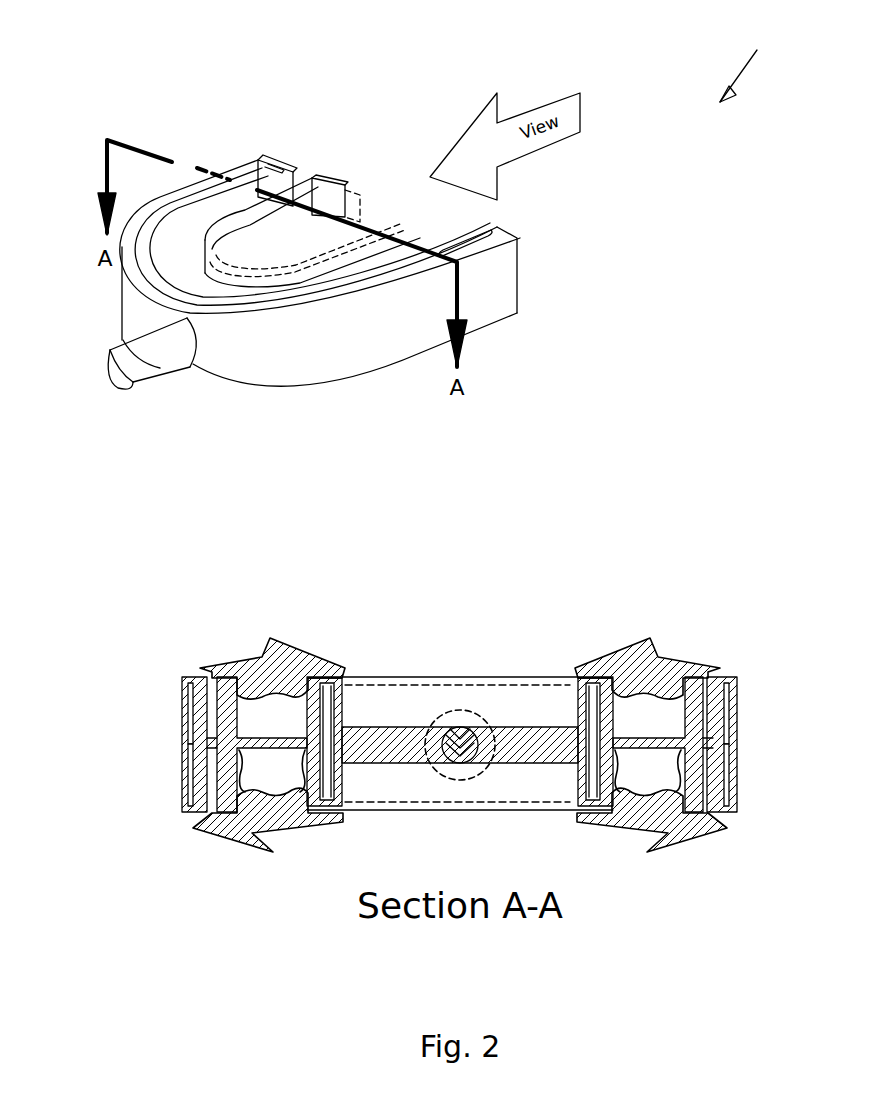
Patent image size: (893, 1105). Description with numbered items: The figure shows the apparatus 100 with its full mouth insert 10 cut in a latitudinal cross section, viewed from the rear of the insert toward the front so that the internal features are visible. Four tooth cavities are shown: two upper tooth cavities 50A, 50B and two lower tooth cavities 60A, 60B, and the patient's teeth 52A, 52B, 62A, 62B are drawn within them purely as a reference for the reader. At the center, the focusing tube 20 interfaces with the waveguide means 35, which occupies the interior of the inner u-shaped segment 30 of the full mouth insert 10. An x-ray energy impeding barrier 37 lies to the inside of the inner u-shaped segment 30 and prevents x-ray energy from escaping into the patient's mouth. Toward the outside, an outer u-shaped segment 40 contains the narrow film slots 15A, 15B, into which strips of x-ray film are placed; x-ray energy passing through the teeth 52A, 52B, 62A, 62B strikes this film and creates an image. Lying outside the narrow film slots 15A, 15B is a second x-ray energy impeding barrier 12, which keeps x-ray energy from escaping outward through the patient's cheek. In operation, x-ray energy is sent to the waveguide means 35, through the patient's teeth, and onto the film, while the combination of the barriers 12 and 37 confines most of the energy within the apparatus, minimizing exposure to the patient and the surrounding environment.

The apparatus 100 is at (752, 64).
The full mouth insert 10 is at (497, 303).
The x-ray energy impeding barrier 12 is at (190, 744).
The narrow film slot 15A is at (207, 693).
The narrow film slot 15B is at (190, 815).
The focusing tube 20 is at (460, 713).
The inner u-shaped segment 30 is at (318, 690).
The waveguide means 35 is at (337, 690).
The x-ray energy impeding barrier 37 is at (345, 707).
The outer u-shaped segment 40 is at (740, 745).
The upper tooth cavity 50A is at (232, 690).
The upper tooth cavity 50B is at (695, 700).
The patient's tooth 52A is at (268, 712).
The patient's tooth 52B is at (645, 708).
The lower tooth cavity 60A is at (302, 815).
The lower tooth cavity 60B is at (614, 812).
The patient's tooth 62A is at (265, 780).
The patient's tooth 62B is at (650, 780).